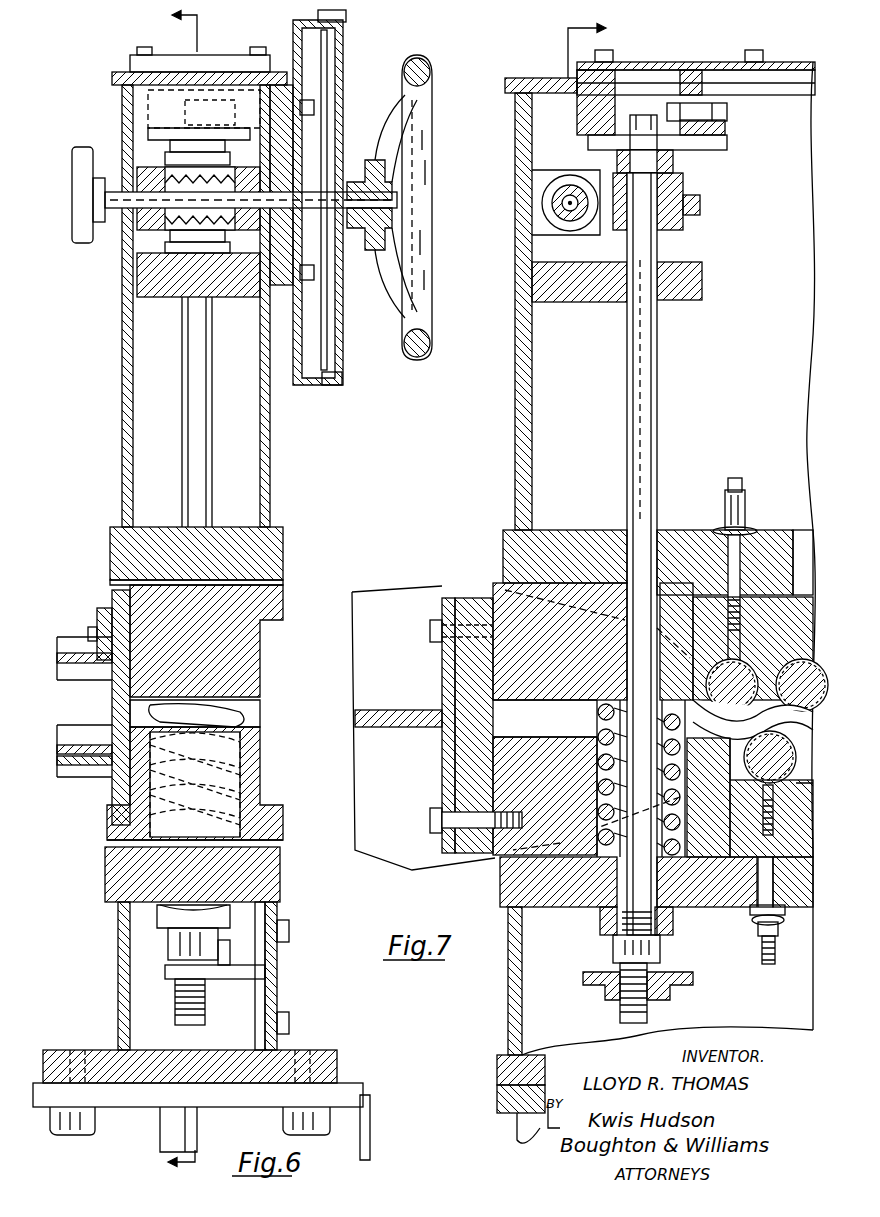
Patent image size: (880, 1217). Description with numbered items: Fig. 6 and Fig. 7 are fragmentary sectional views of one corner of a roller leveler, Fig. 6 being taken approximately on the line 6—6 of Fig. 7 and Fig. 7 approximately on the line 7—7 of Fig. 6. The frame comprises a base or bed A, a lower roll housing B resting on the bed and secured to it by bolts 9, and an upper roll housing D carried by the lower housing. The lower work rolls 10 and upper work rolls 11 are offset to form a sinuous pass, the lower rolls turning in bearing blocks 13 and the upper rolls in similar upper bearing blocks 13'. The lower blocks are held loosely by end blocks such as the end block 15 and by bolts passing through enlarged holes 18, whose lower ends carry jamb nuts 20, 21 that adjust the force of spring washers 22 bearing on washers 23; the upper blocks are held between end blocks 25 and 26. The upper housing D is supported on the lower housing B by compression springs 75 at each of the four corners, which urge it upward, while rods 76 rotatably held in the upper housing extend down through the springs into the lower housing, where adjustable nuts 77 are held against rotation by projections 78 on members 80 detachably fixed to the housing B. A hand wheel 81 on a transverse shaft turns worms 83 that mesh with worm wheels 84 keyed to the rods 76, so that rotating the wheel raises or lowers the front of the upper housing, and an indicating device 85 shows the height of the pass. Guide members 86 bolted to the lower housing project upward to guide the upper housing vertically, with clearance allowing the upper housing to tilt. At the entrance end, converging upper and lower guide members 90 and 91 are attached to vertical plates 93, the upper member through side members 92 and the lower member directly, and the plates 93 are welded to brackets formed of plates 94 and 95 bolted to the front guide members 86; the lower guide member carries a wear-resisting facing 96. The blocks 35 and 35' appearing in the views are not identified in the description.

In FIG. 6, the section line 7— 7 is at (192, 593).
In FIG. 7, the section line 6— 6 is at (569, 577).
In FIG. 6, the bolts 9 is at (95, 1118).
In FIG. 7, the lower work rolls 10 is at (770, 757).
In FIG. 7, the upper work rolls 11 is at (767, 685).
In FIG. 7, the lower bearing blocks 13 is at (750, 797).
In FIG. 7, the upper bearing blocks 13' is at (736, 641).
In FIG. 6, the end block 15 is at (250, 757).
In FIG. 7, the end block 15 is at (553, 742).
In FIG. 7, the enlarged holes 18 is at (758, 878).
In FIG. 7, the jamb nut 20 is at (760, 932).
In FIG. 7, the jamb nut 21 is at (763, 948).
In FIG. 7, the spring washers 22 is at (755, 922).
In FIG. 7, the washers 23 is at (750, 910).
In FIG. 6, the end block 25 is at (256, 665).
In FIG. 7, the end block 26 is at (503, 588).
In FIG. 6, the lower flange block 35 is at (205, 874).
In FIG. 7, the lower flange block 35 is at (629, 882).
In FIG. 6, the upper flange block 35' is at (218, 552).
In FIG. 7, the upper flange block 35' is at (658, 548).
In FIG. 7, the compression springs 75 is at (598, 722).
In FIG. 6, the rods 76 is at (190, 400).
In FIG. 7, the rods 76 is at (652, 412).
In FIG. 7, the adjustable nuts 77 is at (612, 948).
In FIG. 6, the projections 78 is at (228, 950).
In FIG. 6, the members 80 is at (248, 978).
In FIG. 7, the members 80 is at (595, 987).
In FIG. 6, the hand wheel 81 is at (425, 125).
In FIG. 6, the worms 83 is at (140, 238).
In FIG. 7, the worm wheels 84 is at (685, 195).
In FIG. 6, the indicating devices 85 is at (340, 62).
In FIG. 7, the guide members 86 is at (462, 738).
In FIG. 6, the upper horizontal guide member 90 is at (75, 662).
In FIG. 6, the lower horizontal guide member 91 is at (75, 764).
In FIG. 6, the side members 92 is at (97, 616).
In FIG. 6, the vertical plates 93 is at (114, 688).
In FIG. 7, the vertical plates 93 is at (398, 582).
In FIG. 7, the bracket plate 94 is at (415, 712).
In FIG. 7, the bracket plate 95 is at (445, 770).
In FIG. 6, the wear-resisting facing 96 is at (82, 733).
In FIG. 6, the base or bed A is at (371, 1105).
In FIG. 6, the lower roll housing B is at (118, 965).
In FIG. 7, the lower roll housing B is at (508, 995).
In FIG. 6, the upper roll housing D is at (270, 465).
In FIG. 7, the upper roll housing D is at (515, 433).